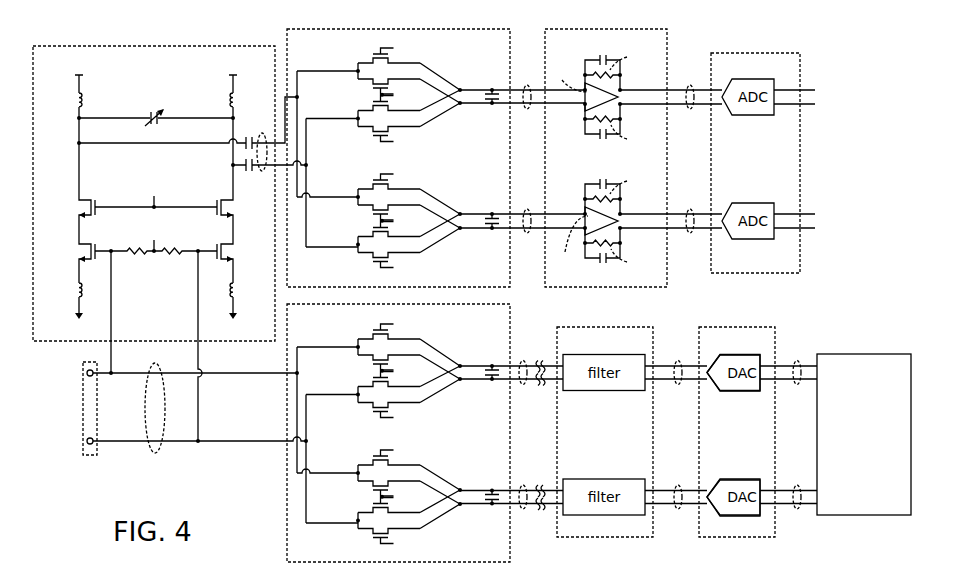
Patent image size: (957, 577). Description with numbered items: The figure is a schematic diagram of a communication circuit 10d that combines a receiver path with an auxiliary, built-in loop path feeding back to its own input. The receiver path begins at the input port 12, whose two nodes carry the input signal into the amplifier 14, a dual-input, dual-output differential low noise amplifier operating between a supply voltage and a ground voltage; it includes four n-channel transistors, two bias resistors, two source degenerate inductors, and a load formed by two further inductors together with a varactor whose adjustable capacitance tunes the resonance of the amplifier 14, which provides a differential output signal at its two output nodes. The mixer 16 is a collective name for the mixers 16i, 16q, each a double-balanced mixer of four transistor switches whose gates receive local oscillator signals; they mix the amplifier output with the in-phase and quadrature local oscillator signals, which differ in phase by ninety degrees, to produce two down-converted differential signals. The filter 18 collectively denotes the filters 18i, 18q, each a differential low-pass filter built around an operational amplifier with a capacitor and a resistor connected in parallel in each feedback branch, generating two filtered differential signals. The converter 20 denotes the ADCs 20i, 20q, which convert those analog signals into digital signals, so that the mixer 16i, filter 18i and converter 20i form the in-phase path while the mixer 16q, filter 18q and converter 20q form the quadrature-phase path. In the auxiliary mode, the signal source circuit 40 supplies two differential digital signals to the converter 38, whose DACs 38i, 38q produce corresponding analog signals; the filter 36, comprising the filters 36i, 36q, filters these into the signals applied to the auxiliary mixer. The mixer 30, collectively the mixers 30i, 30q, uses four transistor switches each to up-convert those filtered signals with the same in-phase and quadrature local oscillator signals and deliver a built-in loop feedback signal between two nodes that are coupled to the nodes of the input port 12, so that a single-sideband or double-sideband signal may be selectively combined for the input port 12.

The communication circuit 10d is at (472, 294).
The input port 12 is at (85, 457).
The amplifier 14 is at (155, 46).
The mixer 16 is at (287, 33).
The mixer 16i is at (442, 132).
The mixer 16q is at (444, 190).
The filter 18 is at (669, 37).
The filter 18i is at (575, 116).
The filter 18q is at (576, 189).
The converter 20 is at (762, 53).
The converter 20i is at (750, 79).
The converter 20q is at (750, 204).
The mixer 30 is at (287, 464).
The mixer 30i is at (442, 408).
The mixer 30q is at (444, 466).
The filter 36 is at (600, 327).
The filter 36i is at (617, 354).
The filter 36q is at (615, 479).
The converter 38 is at (723, 327).
The DAC 38i is at (723, 355).
The DAC 38q is at (723, 480).
The signal source circuit 40 is at (863, 354).